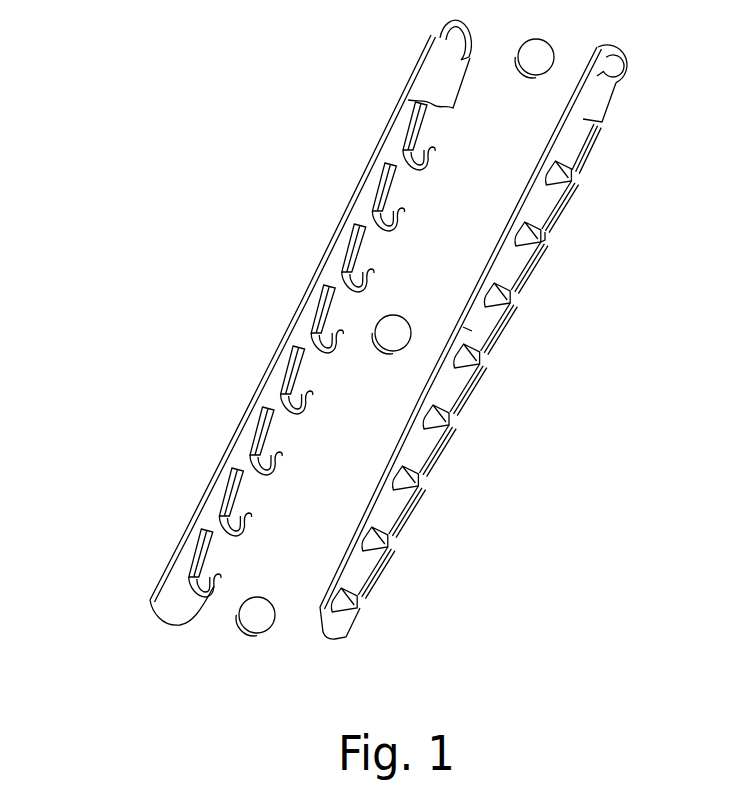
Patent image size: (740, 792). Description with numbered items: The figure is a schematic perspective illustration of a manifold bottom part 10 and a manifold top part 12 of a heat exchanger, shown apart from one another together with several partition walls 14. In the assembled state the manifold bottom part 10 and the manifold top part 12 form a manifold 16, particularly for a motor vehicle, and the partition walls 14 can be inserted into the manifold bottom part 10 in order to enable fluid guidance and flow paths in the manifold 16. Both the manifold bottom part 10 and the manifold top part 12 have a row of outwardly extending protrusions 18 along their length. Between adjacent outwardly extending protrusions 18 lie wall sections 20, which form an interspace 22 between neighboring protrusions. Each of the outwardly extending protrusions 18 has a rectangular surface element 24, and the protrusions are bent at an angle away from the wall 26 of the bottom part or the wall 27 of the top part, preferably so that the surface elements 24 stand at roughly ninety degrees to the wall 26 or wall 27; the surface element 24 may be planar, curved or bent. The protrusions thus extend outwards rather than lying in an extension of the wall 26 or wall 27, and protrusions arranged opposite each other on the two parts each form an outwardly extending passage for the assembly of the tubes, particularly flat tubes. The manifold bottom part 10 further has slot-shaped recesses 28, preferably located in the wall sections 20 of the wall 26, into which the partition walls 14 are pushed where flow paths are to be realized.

The manifold bottom part 10 is at (445, 476).
The manifold top part 12 is at (375, 125).
The partition walls 14 is at (383, 363).
The manifold 16 is at (107, 238).
The outwardly extending protrusions 18 is at (293, 374).
The wall sections 20 is at (387, 210).
The interspace 22 is at (543, 243).
The surface elements 24 is at (200, 568).
The wall 26 is at (440, 87).
The wall 27 is at (181, 600).
The slot-shaped recesses 28 is at (627, 84).